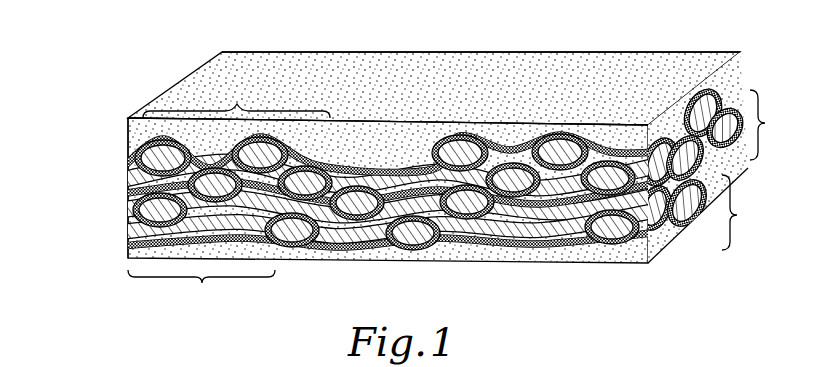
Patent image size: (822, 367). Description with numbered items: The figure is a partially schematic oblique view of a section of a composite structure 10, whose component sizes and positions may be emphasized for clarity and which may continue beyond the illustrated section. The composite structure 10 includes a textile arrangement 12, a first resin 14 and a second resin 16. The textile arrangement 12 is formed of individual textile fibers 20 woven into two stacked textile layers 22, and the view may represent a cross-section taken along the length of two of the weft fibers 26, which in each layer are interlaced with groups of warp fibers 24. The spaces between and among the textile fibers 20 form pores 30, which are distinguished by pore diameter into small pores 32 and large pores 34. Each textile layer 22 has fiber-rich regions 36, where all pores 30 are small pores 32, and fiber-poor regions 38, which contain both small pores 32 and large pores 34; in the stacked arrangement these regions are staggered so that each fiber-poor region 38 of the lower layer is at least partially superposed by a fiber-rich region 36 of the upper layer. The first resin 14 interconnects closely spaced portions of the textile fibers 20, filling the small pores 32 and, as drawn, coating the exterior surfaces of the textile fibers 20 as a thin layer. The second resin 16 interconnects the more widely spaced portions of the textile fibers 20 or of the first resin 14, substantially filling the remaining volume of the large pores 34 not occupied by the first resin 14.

The composite structure 10 is at (117, 312).
The textile arrangement 12 is at (114, 182).
The first resin 14 is at (398, 160).
The second resin 16 is at (490, 132).
The textile fibers 20 is at (468, 249).
The textile layers 22 is at (767, 123).
The warp fibers 24 is at (630, 212).
The weft fibers 26 is at (553, 222).
The pores 30 is at (382, 247).
The small pores 32 is at (572, 138).
The large pores 34 is at (432, 140).
The fiber-rich region 36 is at (237, 104).
The fiber-poor region 38 is at (202, 284).